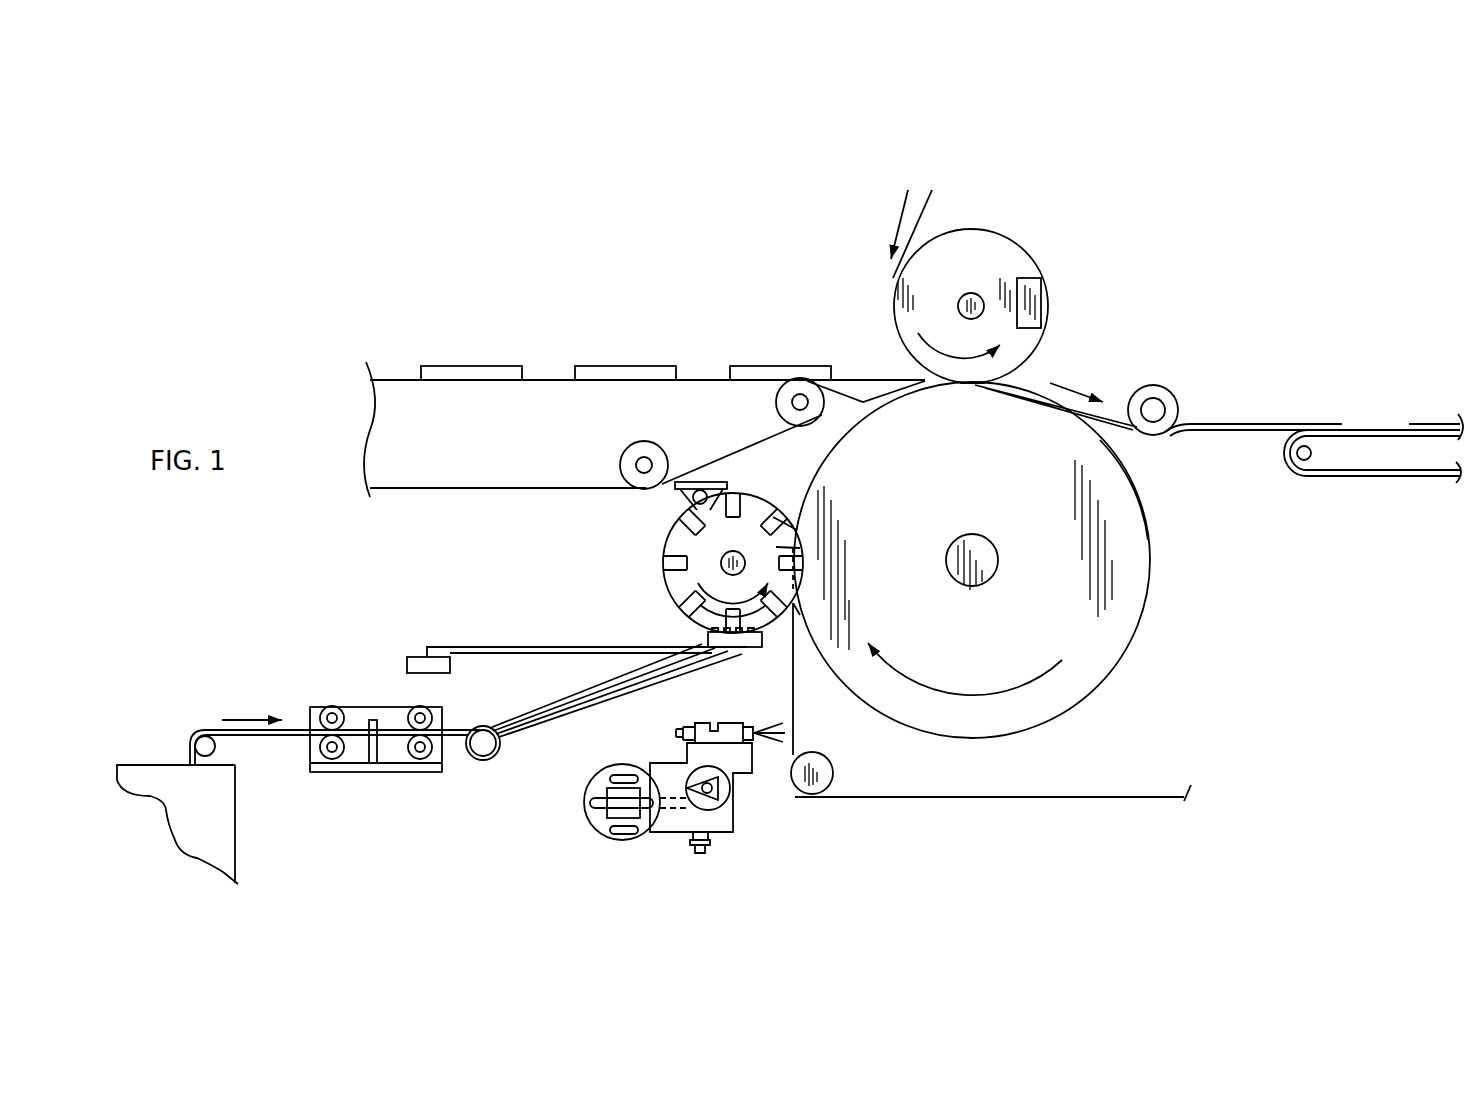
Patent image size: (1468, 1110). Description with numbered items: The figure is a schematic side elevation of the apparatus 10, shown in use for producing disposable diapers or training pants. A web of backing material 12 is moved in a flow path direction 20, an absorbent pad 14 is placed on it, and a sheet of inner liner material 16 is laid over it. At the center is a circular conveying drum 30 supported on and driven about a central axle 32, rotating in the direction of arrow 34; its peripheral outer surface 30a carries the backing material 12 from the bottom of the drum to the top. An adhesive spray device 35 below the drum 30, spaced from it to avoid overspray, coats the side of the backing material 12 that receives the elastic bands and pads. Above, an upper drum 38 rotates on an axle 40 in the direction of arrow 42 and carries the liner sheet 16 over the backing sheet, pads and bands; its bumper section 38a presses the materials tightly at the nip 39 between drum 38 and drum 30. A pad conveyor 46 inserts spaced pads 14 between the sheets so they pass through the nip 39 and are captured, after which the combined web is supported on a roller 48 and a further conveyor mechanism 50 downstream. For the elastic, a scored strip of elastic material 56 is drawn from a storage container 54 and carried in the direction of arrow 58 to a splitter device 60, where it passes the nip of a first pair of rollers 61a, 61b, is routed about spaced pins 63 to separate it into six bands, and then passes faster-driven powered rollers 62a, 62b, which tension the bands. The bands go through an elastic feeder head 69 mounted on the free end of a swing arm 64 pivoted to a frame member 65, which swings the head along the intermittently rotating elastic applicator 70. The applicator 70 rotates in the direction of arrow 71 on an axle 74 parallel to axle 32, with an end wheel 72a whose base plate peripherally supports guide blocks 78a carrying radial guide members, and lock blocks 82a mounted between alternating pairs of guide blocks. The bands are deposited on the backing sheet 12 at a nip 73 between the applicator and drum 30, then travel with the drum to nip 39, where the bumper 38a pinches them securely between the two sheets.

The apparatus 10 is at (740, 268).
The backing material 12 is at (1138, 792).
The absorbent pad 14 is at (623, 366).
The inner liner material 16 is at (918, 223).
The flow path direction 20 is at (1078, 392).
The conveying drum 30 is at (1115, 595).
The peripheral outer surface 30a is at (1139, 504).
The central axle 32 is at (975, 548).
The arrow 34 is at (1000, 686).
The adhesive spray device 35 is at (675, 763).
The upper drum 38 is at (1021, 257).
The bumper section 38a is at (1041, 306).
The nip 39 is at (972, 388).
The axle 40 is at (976, 296).
The arrow 42 is at (935, 347).
The pad conveyor 46 is at (555, 363).
The roller 48 is at (1174, 398).
The conveyor mechanism 50 is at (1356, 424).
The elastic storage container 54 is at (167, 763).
The elastic material strip 56 is at (303, 728).
The arrow 58 is at (247, 718).
The splitter device 60 is at (349, 783).
The first pair roller 61a is at (318, 752).
The first pair roller 61b is at (347, 717).
The powered roller 62a is at (408, 757).
The powered roller 62b is at (420, 710).
The spaced pins 63 is at (382, 720).
The swing arm 64 is at (576, 632).
The frame member 65 is at (423, 653).
The elastic feeder head 69 is at (753, 650).
The elastic applicator 70 is at (791, 630).
The arrow 71 is at (700, 617).
The end wheel 72a is at (775, 498).
The nip 73 is at (803, 553).
The axle 74 is at (720, 567).
The guide blocks 78a is at (787, 523).
The lock blocks 82a is at (758, 648).